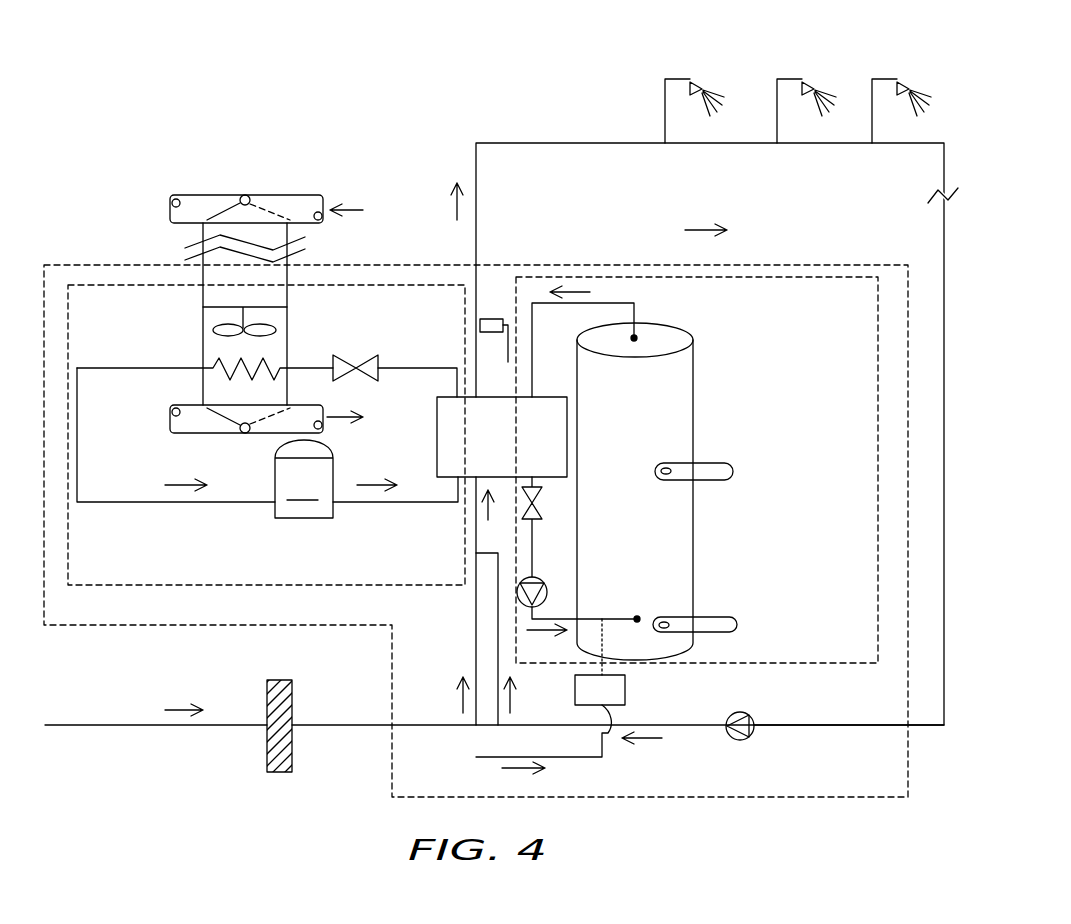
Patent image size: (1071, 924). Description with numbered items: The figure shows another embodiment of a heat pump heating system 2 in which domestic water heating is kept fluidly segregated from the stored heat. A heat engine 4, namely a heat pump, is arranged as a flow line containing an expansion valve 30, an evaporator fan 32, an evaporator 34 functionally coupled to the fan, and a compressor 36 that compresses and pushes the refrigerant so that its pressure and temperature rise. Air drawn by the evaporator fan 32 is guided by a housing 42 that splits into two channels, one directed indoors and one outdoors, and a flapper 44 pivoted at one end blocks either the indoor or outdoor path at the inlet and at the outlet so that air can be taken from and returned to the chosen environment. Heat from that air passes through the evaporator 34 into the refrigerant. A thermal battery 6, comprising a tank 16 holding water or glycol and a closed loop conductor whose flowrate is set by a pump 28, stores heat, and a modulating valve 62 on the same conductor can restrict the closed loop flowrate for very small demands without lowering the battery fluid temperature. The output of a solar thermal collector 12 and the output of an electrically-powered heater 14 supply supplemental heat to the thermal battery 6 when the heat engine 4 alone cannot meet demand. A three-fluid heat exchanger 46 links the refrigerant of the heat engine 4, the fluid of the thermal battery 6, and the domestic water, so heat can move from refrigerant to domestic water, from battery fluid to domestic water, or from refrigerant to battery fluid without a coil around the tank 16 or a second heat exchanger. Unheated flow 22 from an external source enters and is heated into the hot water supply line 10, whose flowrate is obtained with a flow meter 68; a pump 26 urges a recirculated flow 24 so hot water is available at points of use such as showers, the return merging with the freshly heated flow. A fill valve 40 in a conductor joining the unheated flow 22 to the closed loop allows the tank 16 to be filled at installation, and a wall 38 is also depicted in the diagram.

The heating system 2 is at (68, 265).
The heat engine 4 is at (120, 585).
The thermal battery 6 is at (690, 665).
The hot water supply line 10 is at (608, 144).
The output of solar thermal collector 12 is at (712, 463).
The output of electrically-powered heater 14 is at (708, 617).
The tank 16 is at (670, 338).
The unheated flow 22 is at (92, 725).
The recirculated flow 24 is at (820, 725).
The pump 26 is at (744, 712).
The pump 28 is at (542, 578).
The expansion valve 30 is at (358, 375).
The evaporator fan 32 is at (210, 330).
The evaporator 34 is at (213, 362).
The compressor 36 is at (267, 477).
The wall 38 is at (292, 755).
The fill valve 40 is at (618, 703).
The housing 42 is at (203, 392).
The flapper 44 is at (222, 186).
The heat exchanger 46 is at (503, 451).
The modulating valve 62 is at (538, 521).
The flow meter 68 is at (492, 332).